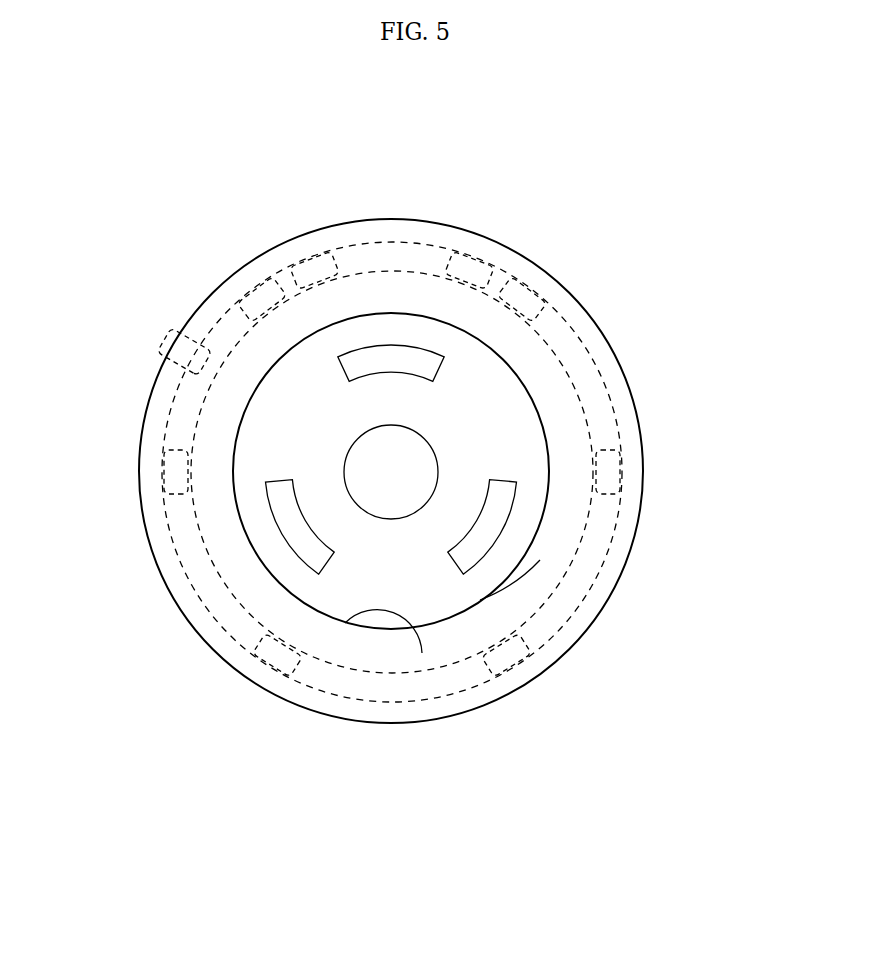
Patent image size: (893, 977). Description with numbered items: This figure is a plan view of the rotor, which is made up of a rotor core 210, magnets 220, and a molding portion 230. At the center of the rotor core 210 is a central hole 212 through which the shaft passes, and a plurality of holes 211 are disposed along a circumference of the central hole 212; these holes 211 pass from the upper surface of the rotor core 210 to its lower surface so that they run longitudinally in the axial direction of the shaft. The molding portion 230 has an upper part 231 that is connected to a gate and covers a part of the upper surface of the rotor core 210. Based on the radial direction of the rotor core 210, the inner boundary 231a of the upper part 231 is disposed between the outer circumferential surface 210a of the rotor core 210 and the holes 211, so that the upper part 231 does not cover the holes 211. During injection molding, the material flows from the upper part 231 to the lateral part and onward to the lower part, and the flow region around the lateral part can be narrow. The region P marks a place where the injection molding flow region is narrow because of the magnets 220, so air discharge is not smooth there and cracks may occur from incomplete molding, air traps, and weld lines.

The molding portion 230 is at (437, 171).
The magnets 220 is at (617, 412).
The rotor core 210 is at (257, 442).
The outer circumferential surface 210a is at (592, 450).
The holes 211 is at (520, 497).
The central hole 212 is at (347, 473).
The upper part 231 is at (538, 575).
The inner boundary 231a is at (422, 653).
The region P is at (156, 342).